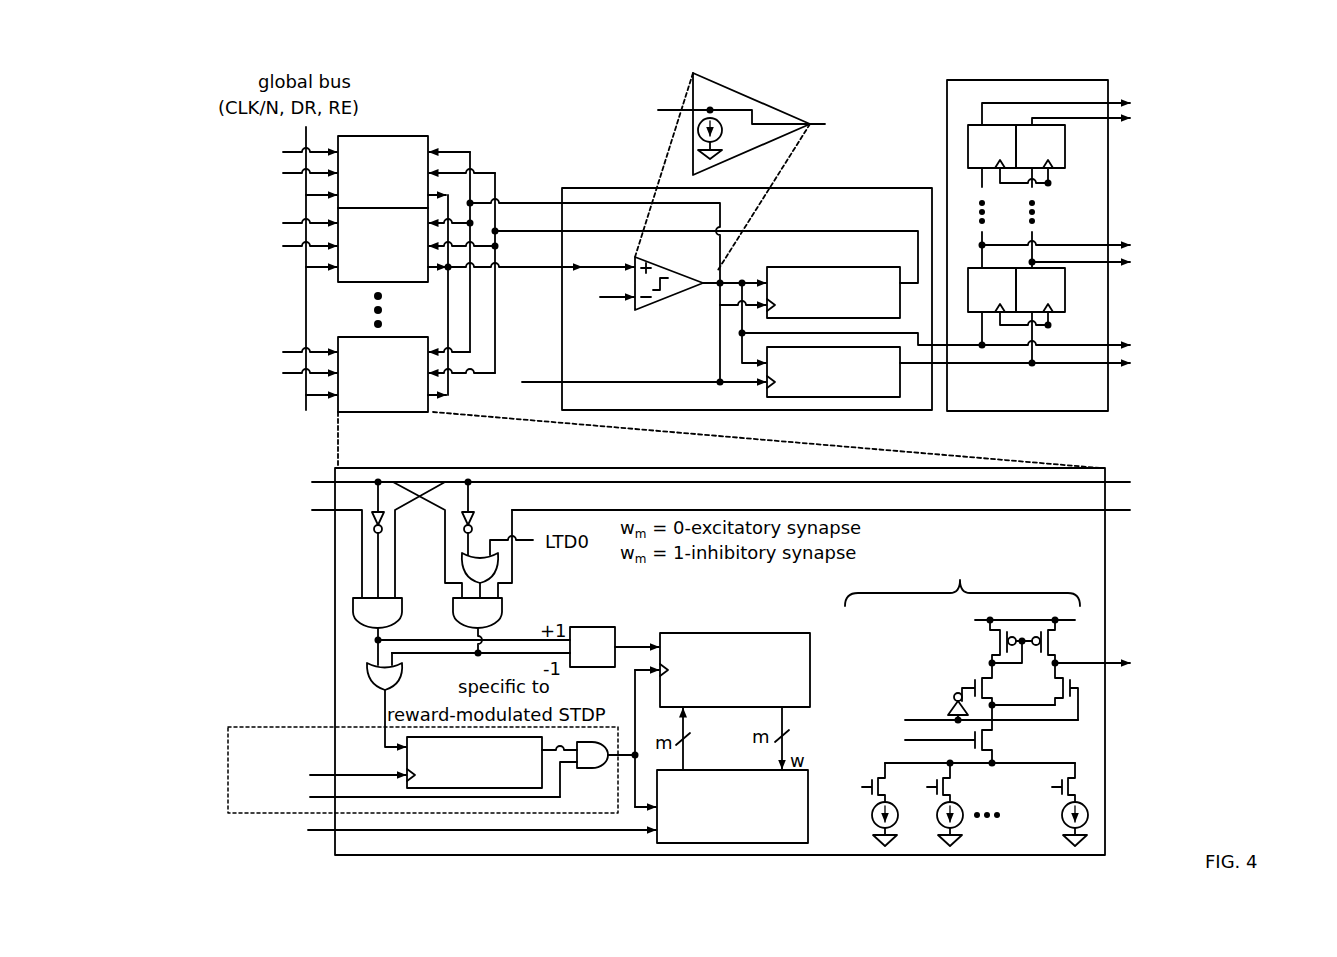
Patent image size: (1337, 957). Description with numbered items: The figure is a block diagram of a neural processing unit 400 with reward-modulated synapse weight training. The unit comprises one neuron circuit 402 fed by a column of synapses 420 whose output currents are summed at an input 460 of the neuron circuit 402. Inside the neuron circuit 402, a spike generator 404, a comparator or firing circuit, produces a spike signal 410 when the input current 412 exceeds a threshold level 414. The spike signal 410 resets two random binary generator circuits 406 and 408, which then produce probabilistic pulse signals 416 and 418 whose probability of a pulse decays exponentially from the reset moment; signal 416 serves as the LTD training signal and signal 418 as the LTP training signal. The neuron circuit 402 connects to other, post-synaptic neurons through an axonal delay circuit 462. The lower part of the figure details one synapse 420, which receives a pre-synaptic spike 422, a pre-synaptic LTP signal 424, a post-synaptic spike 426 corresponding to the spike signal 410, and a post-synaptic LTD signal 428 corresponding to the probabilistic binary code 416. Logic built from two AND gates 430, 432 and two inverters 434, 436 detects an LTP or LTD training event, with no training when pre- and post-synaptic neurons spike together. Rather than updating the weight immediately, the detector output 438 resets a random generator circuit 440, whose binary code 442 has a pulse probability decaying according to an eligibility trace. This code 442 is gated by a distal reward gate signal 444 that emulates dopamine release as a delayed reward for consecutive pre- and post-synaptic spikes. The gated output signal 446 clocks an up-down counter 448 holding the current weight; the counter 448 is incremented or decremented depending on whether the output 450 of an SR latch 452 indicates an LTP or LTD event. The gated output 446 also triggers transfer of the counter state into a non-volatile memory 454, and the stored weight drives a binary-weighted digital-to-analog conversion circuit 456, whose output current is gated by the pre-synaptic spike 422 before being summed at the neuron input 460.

The neural processing unit 400 is at (833, 93).
The neuron circuit 402 is at (868, 188).
The spike generator 404 is at (650, 305).
The random binary generator circuit 406 is at (835, 267).
The random binary generator circuit 408 is at (764, 396).
The spike signal 410 is at (553, 198).
The input current 412 is at (605, 266).
The threshold level 414 is at (607, 301).
The probabilistic pulse signal 416 is at (778, 231).
The probabilistic pulse signal 418 is at (1016, 366).
The synapse 420 is at (395, 137).
The pre-synaptic spike 422 is at (326, 480).
The pre-synaptic LTP signal 424 is at (326, 512).
The post-synaptic spike 426 is at (1118, 481).
The post-synaptic LTD signal 428 is at (1125, 513).
The AND gate 430 is at (397, 622).
The AND gate 432 is at (500, 600).
The inverter 434 is at (375, 512).
The inverter 436 is at (470, 512).
The output of the training-event detector 438 is at (385, 708).
The random generator circuit 440 is at (404, 757).
The binary code 442 is at (562, 758).
The distal reward gate signal 444 is at (322, 800).
The gated output signal 446 is at (640, 812).
The up-down counter 448 is at (812, 641).
The output of the SR latch 450 is at (635, 644).
The SR latch 452 is at (590, 670).
The non-volatile memory 454 is at (810, 826).
The binary-weighted digital-to-analog conversion circuit 456 is at (986, 563).
The input of the neuron circuit 460 is at (527, 272).
The axonal delay circuit 462 is at (1075, 80).